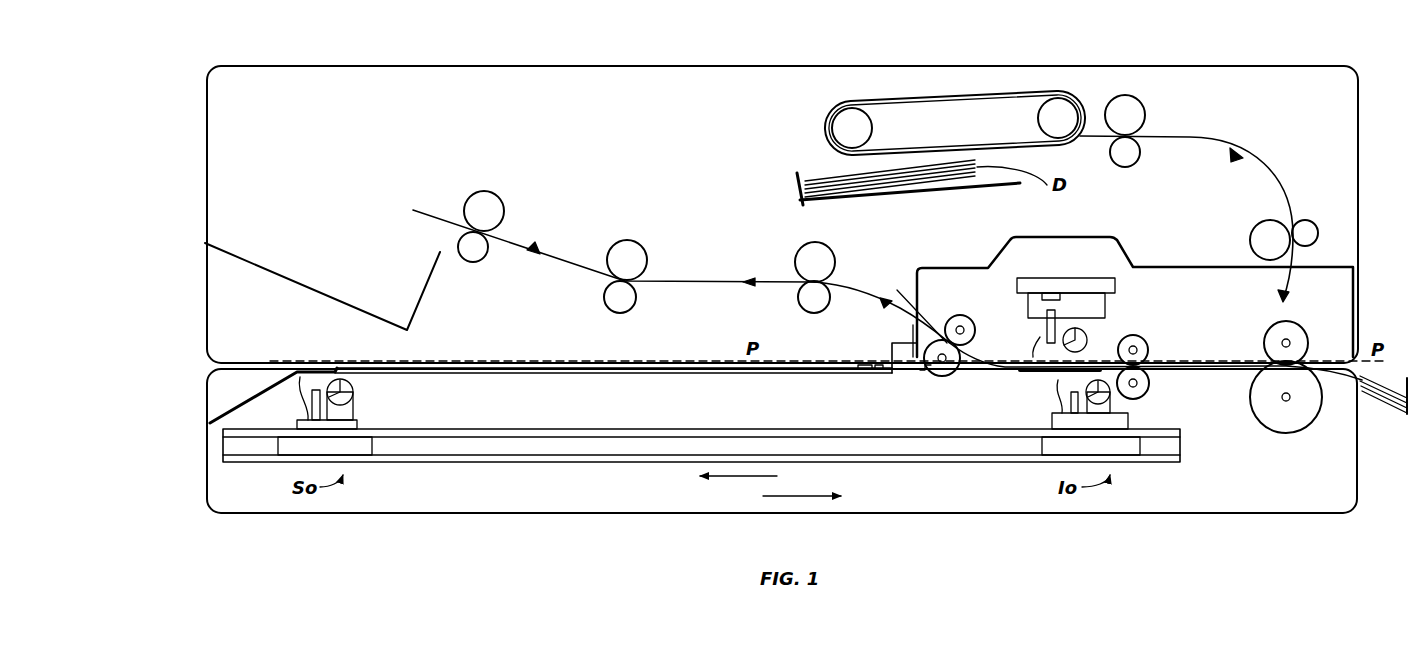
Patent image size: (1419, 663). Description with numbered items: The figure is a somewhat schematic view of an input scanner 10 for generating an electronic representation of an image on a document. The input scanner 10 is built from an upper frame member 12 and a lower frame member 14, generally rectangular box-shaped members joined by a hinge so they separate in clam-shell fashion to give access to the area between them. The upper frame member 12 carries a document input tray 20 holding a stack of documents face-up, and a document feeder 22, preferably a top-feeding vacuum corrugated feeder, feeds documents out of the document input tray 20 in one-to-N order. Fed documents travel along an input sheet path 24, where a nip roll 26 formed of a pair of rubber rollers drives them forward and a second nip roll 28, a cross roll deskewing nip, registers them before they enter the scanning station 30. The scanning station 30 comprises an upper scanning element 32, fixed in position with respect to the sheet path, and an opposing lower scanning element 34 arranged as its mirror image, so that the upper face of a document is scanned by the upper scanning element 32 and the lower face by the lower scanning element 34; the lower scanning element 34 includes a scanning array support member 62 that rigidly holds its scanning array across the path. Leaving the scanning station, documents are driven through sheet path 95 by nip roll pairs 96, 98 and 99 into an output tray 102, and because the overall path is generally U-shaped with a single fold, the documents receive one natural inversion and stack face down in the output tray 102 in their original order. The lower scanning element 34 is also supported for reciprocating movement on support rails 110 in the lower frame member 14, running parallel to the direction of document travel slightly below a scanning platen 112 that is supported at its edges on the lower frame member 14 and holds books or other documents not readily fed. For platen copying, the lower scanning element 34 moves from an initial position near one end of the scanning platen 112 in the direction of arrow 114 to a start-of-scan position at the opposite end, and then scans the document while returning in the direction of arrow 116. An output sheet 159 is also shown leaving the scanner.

The input scanner 10 is at (568, 53).
The upper frame member 12 is at (707, 65).
The lower frame member 14 is at (1357, 490).
The document input tray 20 is at (800, 195).
The document feeder 22 is at (963, 95).
The input sheet path 24 is at (1225, 143).
The nip roll 26 is at (1148, 115).
The second nip roll 28 is at (1307, 218).
The scanning station 30 is at (1188, 265).
The upper scanning element 32 is at (1105, 332).
The lower scanning element 34 is at (1128, 408).
The scanning array support member 62 is at (1042, 443).
The sheet path 95 is at (863, 288).
The nip roll pair 96 is at (795, 262).
The nip roll pair 98 is at (650, 262).
The nip roll pair 99 is at (505, 211).
The output tray 102 is at (425, 293).
The support rails 110 is at (713, 429).
The scanning platen 112 is at (540, 373).
The arrow 114 is at (727, 476).
The arrow 116 is at (810, 496).
The output sheet 159 is at (1393, 370).